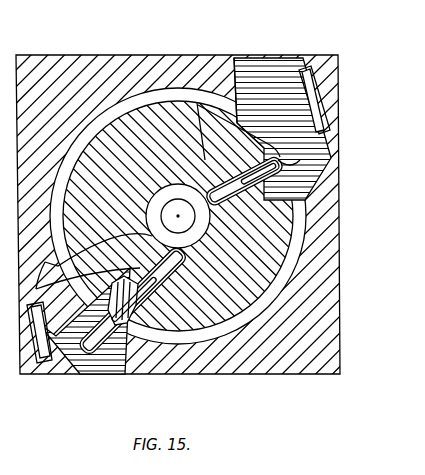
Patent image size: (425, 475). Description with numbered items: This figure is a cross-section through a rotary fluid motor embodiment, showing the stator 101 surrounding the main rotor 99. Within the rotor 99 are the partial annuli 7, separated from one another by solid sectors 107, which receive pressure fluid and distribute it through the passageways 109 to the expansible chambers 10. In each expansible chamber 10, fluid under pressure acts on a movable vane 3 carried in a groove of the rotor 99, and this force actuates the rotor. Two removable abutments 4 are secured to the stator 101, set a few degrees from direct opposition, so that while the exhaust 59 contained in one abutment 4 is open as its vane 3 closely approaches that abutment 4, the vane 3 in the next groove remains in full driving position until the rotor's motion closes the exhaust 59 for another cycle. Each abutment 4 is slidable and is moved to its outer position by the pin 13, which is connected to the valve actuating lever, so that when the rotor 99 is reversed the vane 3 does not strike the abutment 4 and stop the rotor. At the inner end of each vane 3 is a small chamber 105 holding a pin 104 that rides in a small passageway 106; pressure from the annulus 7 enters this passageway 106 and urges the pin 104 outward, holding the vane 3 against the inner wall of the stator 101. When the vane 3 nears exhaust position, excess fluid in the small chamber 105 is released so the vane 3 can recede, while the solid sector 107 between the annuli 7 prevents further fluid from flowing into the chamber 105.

The stator 101 is at (60, 72).
The main rotor 99 is at (150, 120).
The partial annuli 7 is at (152, 192).
The solid sectors 107 is at (191, 184).
The removable abutment 4 is at (282, 72).
The exhaust 59 is at (296, 78).
The pin 13 is at (312, 86).
The expansible chambers 10 is at (282, 146).
The passageways 109 is at (292, 170).
The movable vane 3 is at (300, 186).
The pin 104 is at (148, 270).
The small chamber 105 is at (88, 283).
The passageways 106 is at (135, 240).